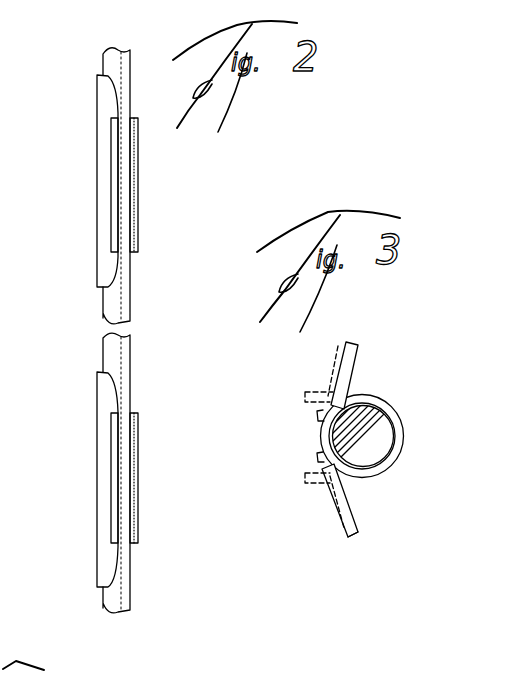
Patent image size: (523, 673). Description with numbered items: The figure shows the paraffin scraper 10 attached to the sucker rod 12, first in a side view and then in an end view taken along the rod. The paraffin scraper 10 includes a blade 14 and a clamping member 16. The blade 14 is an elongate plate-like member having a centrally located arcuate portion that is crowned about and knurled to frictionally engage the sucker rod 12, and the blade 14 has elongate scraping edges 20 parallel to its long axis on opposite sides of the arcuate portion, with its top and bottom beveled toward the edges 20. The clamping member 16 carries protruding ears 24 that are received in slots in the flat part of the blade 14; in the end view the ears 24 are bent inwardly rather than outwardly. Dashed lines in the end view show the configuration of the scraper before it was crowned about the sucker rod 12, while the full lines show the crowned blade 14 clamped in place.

In FIG. 2, the paraffin scraper 10 is at (134, 232).
In FIG. 2, the sucker rod 12 is at (132, 353).
In FIG. 3, the sucker rod 12 is at (396, 428).
In FIG. 3, the blade 14 is at (369, 521).
In FIG. 2, the clamping member 16 is at (141, 186).
In FIG. 3, the clamping member 16 is at (406, 447).
In FIG. 2, the scraping edges 20 is at (113, 132).
In FIG. 3, the scraping edges 20 is at (346, 529).
In FIG. 2, the ears 24 is at (110, 446).
In FIG. 3, the ears 24 is at (318, 414).